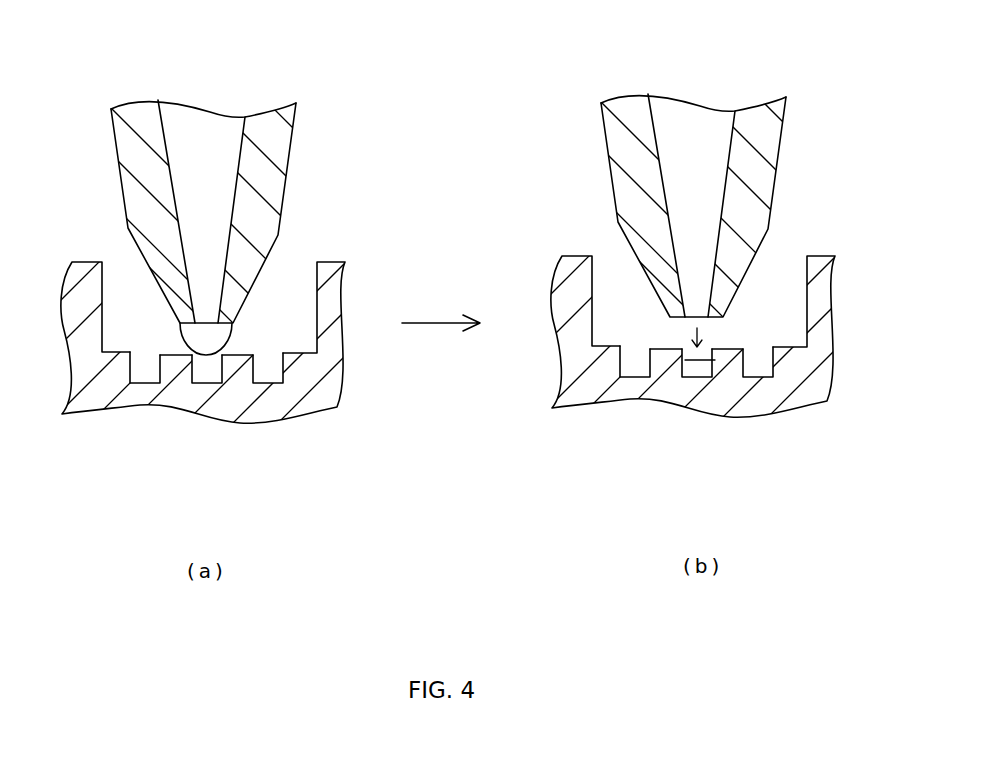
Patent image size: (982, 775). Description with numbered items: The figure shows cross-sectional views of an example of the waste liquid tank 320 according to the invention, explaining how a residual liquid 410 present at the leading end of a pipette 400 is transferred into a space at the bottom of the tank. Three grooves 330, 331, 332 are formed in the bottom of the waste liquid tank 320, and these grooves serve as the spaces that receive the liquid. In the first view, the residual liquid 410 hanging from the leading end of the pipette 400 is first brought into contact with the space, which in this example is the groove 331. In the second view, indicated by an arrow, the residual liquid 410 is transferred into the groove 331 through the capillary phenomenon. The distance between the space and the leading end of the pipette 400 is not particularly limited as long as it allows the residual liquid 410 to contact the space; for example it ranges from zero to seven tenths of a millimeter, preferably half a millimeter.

The waste liquid tank 320 is at (128, 292).
The groove 330 is at (145, 372).
The groove 331 is at (208, 372).
The groove 332 is at (272, 372).
The pipette 400 is at (272, 174).
The residual liquid 410 is at (208, 343).